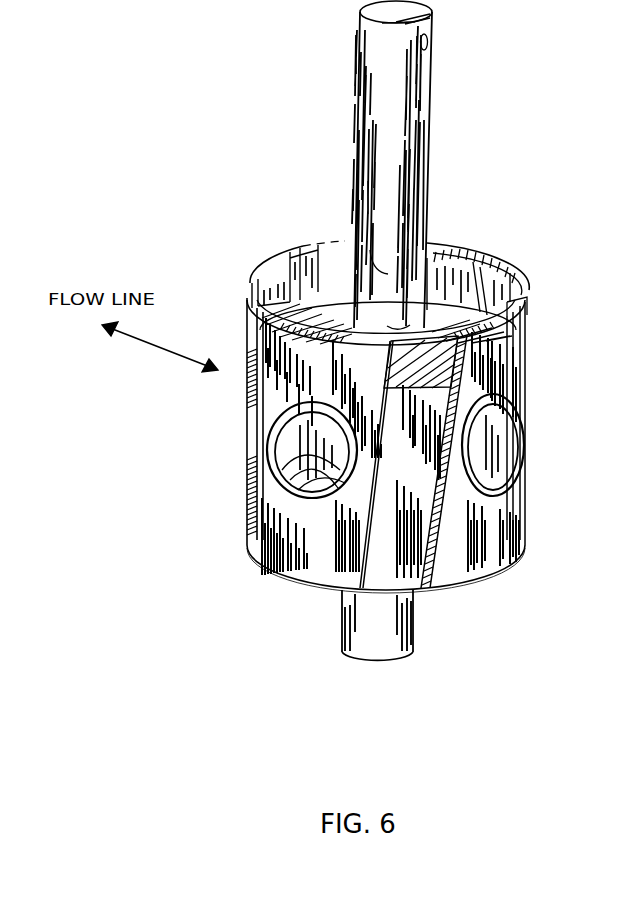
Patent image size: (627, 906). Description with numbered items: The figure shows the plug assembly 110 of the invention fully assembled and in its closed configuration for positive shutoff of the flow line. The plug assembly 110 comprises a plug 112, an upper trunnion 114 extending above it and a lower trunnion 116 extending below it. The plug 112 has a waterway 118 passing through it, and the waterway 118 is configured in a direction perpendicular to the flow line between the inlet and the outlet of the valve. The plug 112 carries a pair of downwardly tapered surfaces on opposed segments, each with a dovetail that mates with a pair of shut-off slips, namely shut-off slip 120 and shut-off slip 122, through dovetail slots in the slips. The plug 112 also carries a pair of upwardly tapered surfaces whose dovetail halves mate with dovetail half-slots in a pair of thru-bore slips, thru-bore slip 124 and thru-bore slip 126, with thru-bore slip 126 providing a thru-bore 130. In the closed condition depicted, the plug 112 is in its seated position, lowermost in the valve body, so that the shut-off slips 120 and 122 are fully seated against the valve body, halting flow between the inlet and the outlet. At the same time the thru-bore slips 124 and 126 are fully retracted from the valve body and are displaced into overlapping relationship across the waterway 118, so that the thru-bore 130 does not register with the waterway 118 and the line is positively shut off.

The plug assembly 110 is at (323, 703).
The plug 112 is at (395, 558).
The upper trunnion 114 is at (373, 43).
The lower trunnion 116 is at (366, 655).
The waterway 118 is at (321, 484).
The shut-off slip 120 is at (262, 269).
The shut-off slip 122 is at (513, 357).
The thru-bore slip 124 is at (450, 256).
The thru-bore slip 126 is at (305, 582).
The thru-bore 130 is at (280, 430).